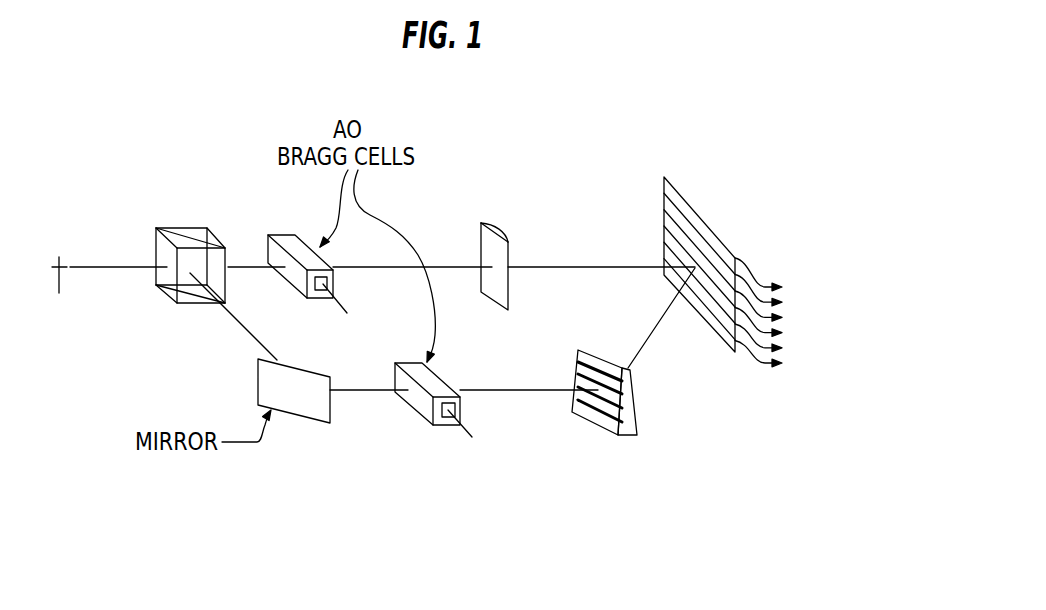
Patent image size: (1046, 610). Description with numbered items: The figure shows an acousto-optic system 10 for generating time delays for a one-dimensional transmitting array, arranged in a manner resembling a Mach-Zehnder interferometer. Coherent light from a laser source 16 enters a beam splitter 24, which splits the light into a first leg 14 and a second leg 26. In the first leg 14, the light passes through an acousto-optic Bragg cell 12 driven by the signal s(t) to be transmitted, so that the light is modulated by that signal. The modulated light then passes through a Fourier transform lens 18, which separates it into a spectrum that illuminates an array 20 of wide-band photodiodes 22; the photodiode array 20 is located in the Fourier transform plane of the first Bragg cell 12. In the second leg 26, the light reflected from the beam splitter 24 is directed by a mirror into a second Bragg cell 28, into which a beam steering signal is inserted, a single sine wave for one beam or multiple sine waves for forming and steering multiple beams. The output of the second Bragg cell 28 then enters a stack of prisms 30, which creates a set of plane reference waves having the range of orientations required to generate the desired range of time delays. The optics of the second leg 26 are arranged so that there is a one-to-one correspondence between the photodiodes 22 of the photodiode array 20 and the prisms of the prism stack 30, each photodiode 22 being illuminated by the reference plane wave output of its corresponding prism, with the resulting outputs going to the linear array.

The acousto-optic system 10 is at (188, 128).
The acousto-optic Bragg cell 12 is at (290, 234).
The first leg 14 is at (241, 264).
The laser source 16 is at (59, 250).
The Fourier transform lens 18 is at (485, 220).
The array of wide-band photodiodes 20 is at (650, 198).
The wide-band photodiodes 22 is at (707, 220).
The beam splitter 24 is at (158, 297).
The second leg 26 is at (240, 330).
The second Bragg cell 28 is at (435, 374).
The stack of prisms 30 is at (603, 434).